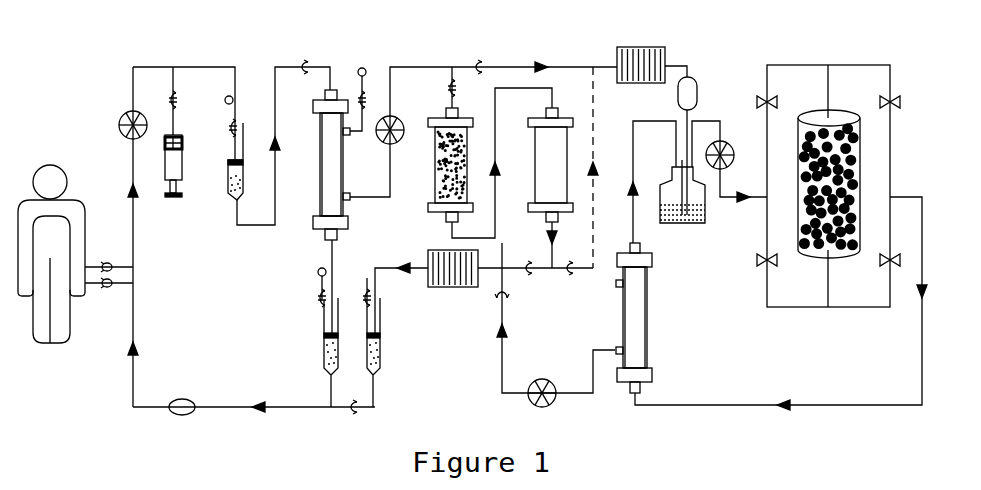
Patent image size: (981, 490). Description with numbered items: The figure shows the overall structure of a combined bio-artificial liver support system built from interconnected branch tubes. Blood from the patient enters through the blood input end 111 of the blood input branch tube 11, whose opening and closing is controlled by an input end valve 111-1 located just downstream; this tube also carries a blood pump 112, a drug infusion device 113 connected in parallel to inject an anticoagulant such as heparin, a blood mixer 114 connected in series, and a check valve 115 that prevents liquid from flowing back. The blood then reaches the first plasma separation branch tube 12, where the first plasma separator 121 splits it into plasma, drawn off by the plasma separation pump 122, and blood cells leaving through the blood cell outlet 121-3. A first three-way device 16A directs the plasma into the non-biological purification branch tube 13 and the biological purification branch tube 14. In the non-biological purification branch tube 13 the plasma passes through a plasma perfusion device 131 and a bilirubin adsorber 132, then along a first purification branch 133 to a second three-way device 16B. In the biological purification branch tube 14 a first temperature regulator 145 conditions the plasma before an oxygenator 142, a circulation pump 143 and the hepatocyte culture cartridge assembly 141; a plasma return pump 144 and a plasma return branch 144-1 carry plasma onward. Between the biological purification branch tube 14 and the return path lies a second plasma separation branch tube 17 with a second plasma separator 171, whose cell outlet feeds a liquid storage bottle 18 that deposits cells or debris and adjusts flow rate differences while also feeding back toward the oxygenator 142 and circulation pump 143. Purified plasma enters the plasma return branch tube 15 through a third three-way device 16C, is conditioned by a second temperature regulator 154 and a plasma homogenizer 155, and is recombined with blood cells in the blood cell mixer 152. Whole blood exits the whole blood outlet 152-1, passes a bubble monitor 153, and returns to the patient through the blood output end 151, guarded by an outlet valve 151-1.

The blood input branch tube 11 is at (205, 200).
The blood input end 111 is at (88, 266).
The input end valve 111-1 is at (113, 265).
The blood pump 112 is at (120, 122).
The drug infusion device 113 is at (175, 132).
The blood mixer 114 is at (232, 193).
The check valve 115 is at (300, 63).
The first plasma separation branch tube 12 is at (338, 76).
The first plasma separator 121 is at (330, 165).
The blood cell outlet 121-3 is at (323, 237).
The plasma separation pump 122 is at (388, 140).
The non-biological purification branch tube 13 is at (478, 110).
The plasma perfusion device 131 is at (443, 158).
The bilirubin adsorber 132 is at (538, 165).
The first purification branch 133 is at (568, 245).
The biological purification branch tube 14 is at (852, 86).
The hepatocyte culture cartridge assembly 141 is at (818, 120).
The oxygenator 142 is at (689, 92).
The circulation pump 143 is at (727, 150).
The plasma return pump 144 is at (543, 385).
The plasma return branch 144-1 is at (507, 380).
The first temperature regulator 145 is at (655, 46).
The plasma return branch tube 15 is at (463, 337).
The blood output end 151 is at (87, 285).
The outlet valve 151-1 is at (113, 287).
The blood cell mixer 152 is at (328, 372).
The whole blood outlet 152-1 is at (283, 405).
The bubble monitor 153 is at (178, 400).
The second temperature regulator 154 is at (430, 250).
The plasma homogenizer 155 is at (380, 372).
The first three-way device 16A is at (452, 66).
The second three-way device 16B is at (552, 265).
The third three-way device 16C is at (502, 268).
The second plasma separation branch tube 17 is at (598, 392).
The second plasma separator 171 is at (638, 315).
The liquid storage bottle 18 is at (680, 225).